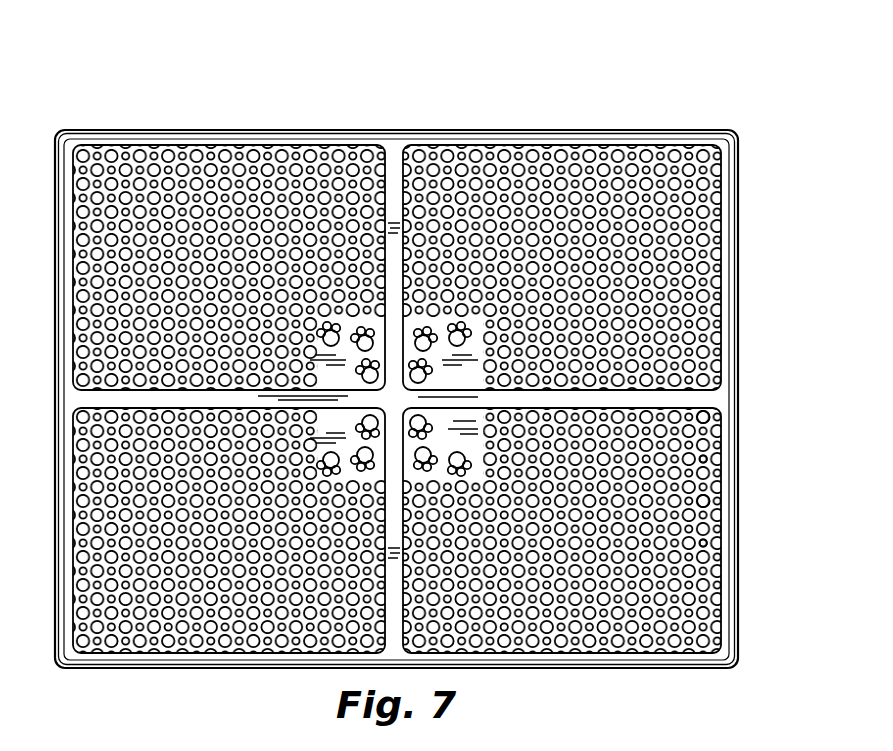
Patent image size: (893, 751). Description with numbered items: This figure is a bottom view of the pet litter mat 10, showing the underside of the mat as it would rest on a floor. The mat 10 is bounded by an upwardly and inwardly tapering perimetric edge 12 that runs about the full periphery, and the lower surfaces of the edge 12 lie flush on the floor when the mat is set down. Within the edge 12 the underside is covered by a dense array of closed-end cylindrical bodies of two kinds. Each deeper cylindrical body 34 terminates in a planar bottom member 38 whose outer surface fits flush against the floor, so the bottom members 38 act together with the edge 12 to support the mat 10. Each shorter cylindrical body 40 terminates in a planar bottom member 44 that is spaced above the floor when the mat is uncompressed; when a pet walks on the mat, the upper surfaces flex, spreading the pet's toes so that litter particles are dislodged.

The litter mat 10 is at (583, 100).
The perimetric edge 12 is at (727, 301).
The planar bottom member 38 is at (701, 410).
The planar bottom member 44 is at (699, 450).
The cylindrical body 34 is at (701, 491).
The cylindrical body 40 is at (699, 533).